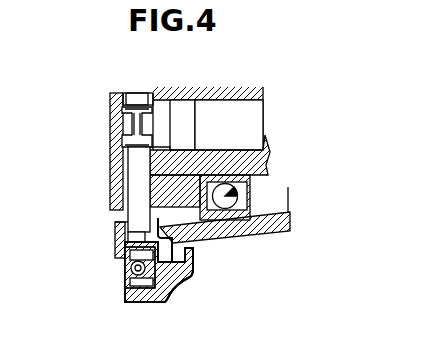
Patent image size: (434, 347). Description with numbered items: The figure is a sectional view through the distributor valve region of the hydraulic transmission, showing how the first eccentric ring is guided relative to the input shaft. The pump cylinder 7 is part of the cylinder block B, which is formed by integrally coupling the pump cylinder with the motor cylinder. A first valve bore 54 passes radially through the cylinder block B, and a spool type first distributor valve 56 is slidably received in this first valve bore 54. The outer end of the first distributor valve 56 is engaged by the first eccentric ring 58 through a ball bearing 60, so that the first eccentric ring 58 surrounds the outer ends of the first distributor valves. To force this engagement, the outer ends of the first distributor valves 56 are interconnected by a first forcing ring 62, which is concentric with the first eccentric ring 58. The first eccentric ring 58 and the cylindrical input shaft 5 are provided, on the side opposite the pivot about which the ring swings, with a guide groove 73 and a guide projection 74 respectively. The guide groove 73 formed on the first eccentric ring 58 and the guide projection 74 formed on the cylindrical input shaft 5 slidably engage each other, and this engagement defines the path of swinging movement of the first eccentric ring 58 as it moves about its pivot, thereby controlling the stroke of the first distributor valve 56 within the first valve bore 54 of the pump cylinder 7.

The cylindrical input shaft 5 is at (265, 231).
The pump cylinder 7 is at (270, 153).
The first valve bore 54 is at (112, 172).
The first distributor valve 56 is at (115, 226).
The first eccentric ring 58 is at (148, 298).
The ball bearing 60 is at (132, 273).
The first forcing ring 62 is at (122, 253).
The guide groove 73 is at (196, 256).
The guide projection 74 is at (186, 280).
The cylinder block B is at (108, 193).